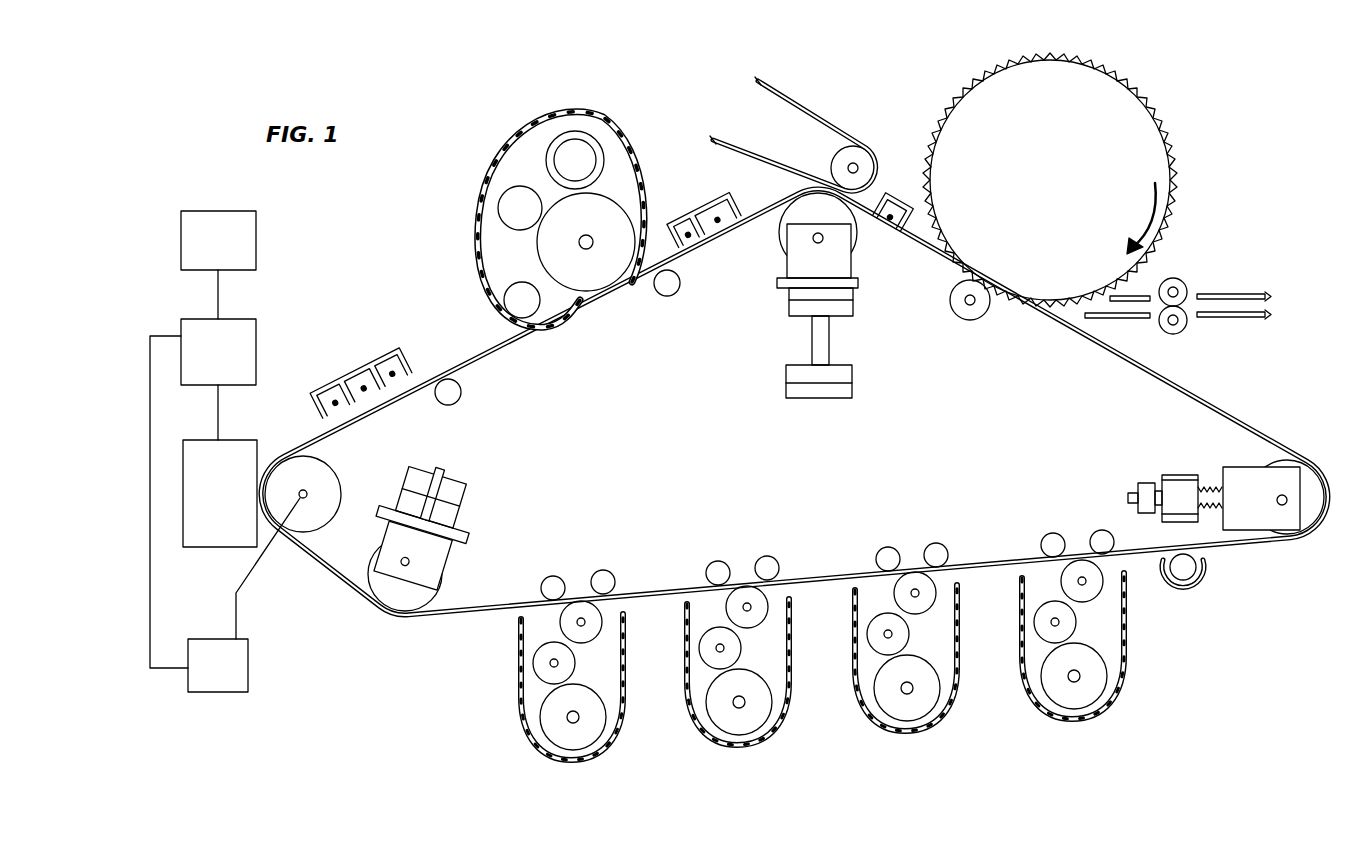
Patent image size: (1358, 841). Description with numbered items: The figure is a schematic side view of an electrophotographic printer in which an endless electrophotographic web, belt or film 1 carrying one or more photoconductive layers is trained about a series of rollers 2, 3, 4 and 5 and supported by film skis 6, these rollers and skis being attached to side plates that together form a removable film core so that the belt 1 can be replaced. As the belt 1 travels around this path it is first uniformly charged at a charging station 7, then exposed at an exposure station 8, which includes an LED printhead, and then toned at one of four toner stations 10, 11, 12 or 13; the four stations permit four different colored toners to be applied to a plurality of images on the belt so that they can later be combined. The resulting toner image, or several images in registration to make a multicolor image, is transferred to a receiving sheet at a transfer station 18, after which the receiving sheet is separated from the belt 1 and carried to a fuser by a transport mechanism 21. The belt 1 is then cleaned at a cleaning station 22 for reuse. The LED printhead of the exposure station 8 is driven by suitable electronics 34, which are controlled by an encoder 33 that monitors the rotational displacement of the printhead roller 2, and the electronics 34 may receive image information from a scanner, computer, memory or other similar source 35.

The endless electrophotographic web, belt or film 1 is at (481, 606).
The printhead roller 2 is at (288, 468).
The roller 3 is at (385, 600).
The roller 4 is at (1312, 487).
The roller 5 is at (808, 214).
The film skis 6 is at (458, 401).
The charging station 7 is at (362, 378).
The exposure station 8 is at (197, 440).
The toner station 10 is at (622, 712).
The toner station 11 is at (788, 694).
The toner station 12 is at (956, 678).
The toner station 13 is at (1123, 665).
The transfer station 18 is at (1162, 141).
The transport mechanism 21 is at (770, 160).
The cleaning station 22 is at (666, 204).
The encoder 33 is at (228, 692).
The suitable electronics 34 is at (256, 325).
The scanner, computer, memory or other similar source 35 is at (256, 220).